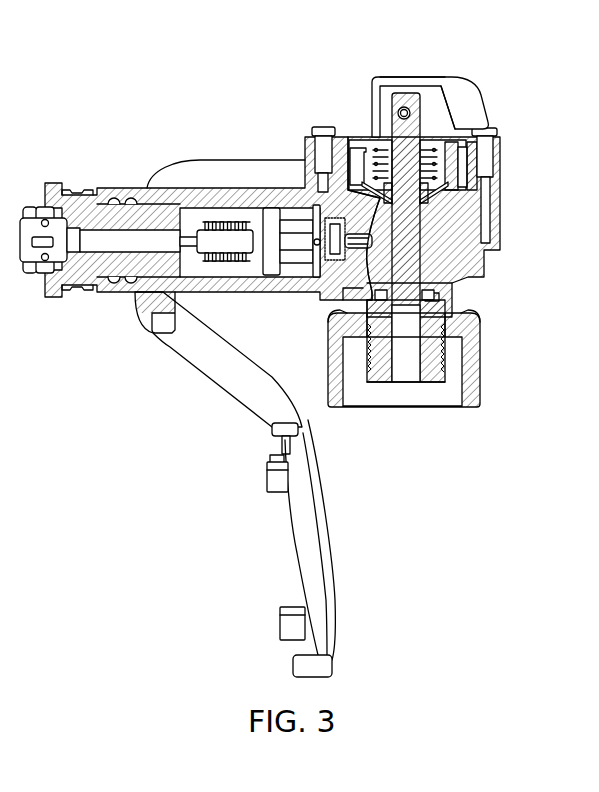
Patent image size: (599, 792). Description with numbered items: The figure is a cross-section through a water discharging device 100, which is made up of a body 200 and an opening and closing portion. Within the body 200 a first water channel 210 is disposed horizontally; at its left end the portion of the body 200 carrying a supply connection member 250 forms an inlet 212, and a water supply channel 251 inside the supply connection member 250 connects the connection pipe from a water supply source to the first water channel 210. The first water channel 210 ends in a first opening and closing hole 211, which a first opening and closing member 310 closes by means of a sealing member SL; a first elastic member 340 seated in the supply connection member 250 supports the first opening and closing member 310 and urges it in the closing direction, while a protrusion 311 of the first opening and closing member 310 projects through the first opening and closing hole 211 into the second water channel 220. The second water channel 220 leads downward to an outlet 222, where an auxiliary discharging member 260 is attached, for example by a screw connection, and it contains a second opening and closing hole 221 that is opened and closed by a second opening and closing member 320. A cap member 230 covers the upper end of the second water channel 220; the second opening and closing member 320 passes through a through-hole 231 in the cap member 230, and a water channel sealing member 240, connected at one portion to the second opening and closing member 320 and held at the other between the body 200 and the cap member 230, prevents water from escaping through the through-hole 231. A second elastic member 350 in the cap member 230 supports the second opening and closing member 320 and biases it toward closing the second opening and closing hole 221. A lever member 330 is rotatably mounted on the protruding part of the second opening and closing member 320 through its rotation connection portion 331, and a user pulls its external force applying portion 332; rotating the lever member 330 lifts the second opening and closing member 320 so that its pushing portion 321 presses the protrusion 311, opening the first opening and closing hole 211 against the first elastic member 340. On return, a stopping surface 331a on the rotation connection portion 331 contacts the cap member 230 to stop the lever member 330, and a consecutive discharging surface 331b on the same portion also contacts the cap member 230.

The water discharging device 100 is at (122, 30).
The body 200 is at (225, 185).
The first water channel 210 is at (237, 216).
The first opening and closing hole 211 is at (320, 292).
The inlet 212 is at (115, 196).
The second water channel 220 is at (435, 222).
The second opening and closing hole 221 is at (443, 330).
The outlet 222 is at (432, 370).
The cap member 230 is at (343, 130).
The through-hole 231 is at (497, 133).
The water channel sealing member 240 is at (449, 193).
The supply connection member 250 is at (73, 188).
The water supply channel 251 is at (105, 245).
The auxiliary discharging member 260 is at (486, 380).
The first opening and closing member 310 is at (287, 220).
The protrusion 311 is at (357, 150).
The second opening and closing member 320 is at (385, 110).
The pushing portion 321 is at (433, 263).
The lever member 330 is at (208, 395).
The rotation connection portion 331 is at (470, 86).
The stopping surface 331a is at (450, 132).
The consecutive discharging surface 331b is at (425, 77).
The external force applying portion 332 is at (328, 563).
The first elastic member 340 is at (212, 220).
The second elastic member 350 is at (442, 168).
The sealing member SL is at (274, 292).